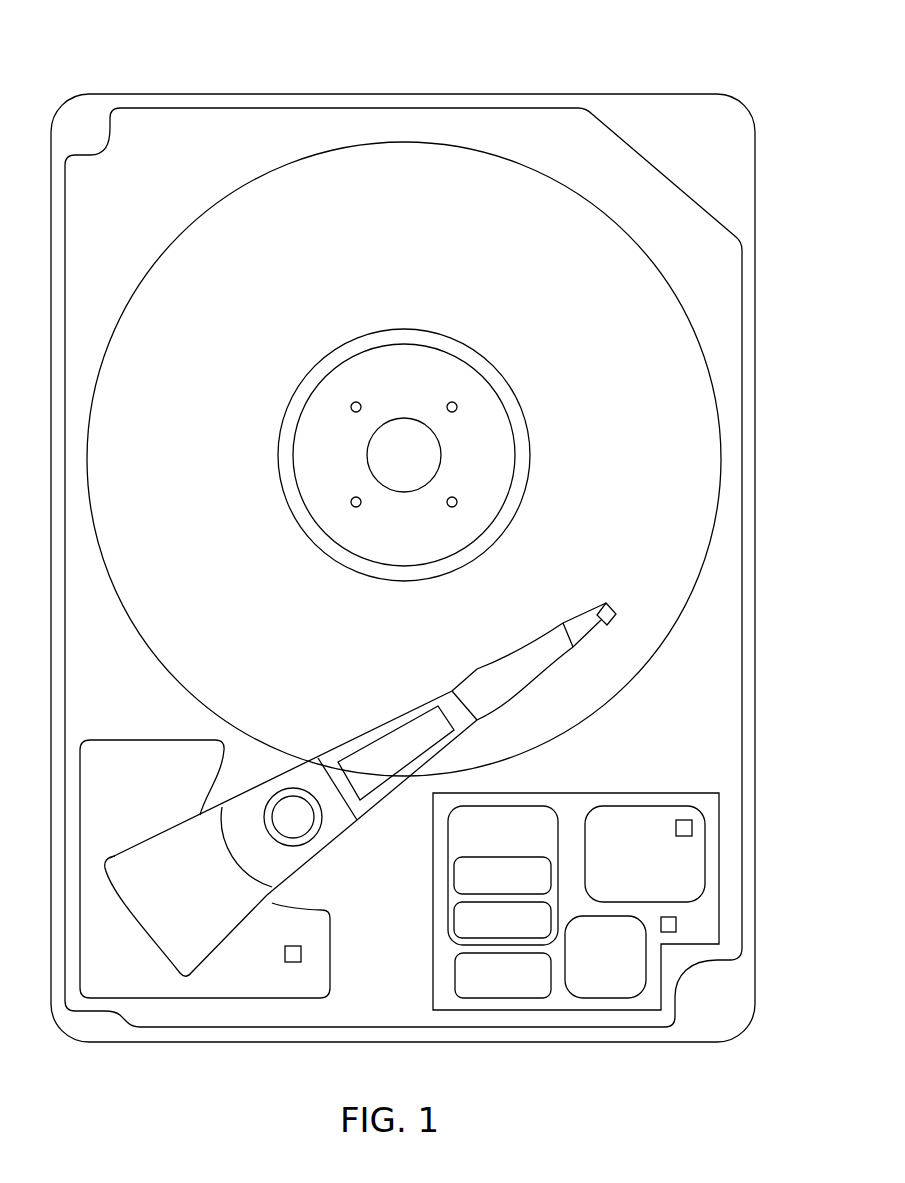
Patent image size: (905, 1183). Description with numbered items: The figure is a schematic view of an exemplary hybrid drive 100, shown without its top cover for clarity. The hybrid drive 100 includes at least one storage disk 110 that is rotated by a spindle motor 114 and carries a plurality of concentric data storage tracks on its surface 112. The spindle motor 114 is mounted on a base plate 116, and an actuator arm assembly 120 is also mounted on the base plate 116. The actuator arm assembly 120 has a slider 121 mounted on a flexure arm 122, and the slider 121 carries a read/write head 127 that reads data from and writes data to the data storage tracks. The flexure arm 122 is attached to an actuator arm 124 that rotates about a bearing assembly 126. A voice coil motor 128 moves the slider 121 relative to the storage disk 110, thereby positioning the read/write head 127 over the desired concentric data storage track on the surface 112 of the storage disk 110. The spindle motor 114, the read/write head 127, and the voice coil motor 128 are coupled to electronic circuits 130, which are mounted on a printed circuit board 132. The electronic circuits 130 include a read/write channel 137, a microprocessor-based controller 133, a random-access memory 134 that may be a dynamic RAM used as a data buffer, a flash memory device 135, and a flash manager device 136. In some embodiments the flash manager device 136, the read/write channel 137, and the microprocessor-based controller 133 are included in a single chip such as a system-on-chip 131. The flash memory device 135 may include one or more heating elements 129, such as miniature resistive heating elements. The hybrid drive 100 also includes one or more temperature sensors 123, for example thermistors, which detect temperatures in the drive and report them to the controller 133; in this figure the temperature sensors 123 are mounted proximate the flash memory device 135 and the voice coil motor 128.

The hybrid drive 100 is at (140, 56).
The storage disk 110 is at (404, 455).
The surface of storage disk 112 is at (212, 439).
The spindle motor 114 is at (502, 394).
The base plate 116 is at (743, 594).
The actuator arm assembly 120 is at (399, 706).
The slider 121 is at (645, 530).
The flexure arm 122 is at (573, 612).
The temperature sensors 123 is at (676, 925).
The actuator arm 124 is at (529, 606).
The bearing assembly 126 is at (330, 870).
The read/write head 127 is at (605, 575).
The voice coil motor 128 is at (330, 938).
The heating elements 129 is at (692, 828).
The electronic circuits 130 is at (624, 856).
The system-on-chip 131 is at (523, 850).
The printed circuit board 132 is at (657, 793).
The microprocessor-based controller 133 is at (523, 889).
The random-access memory 134 is at (523, 988).
The flash memory device 135 is at (666, 868).
The flash manager device 136 is at (626, 970).
The read/write channel 137 is at (523, 934).